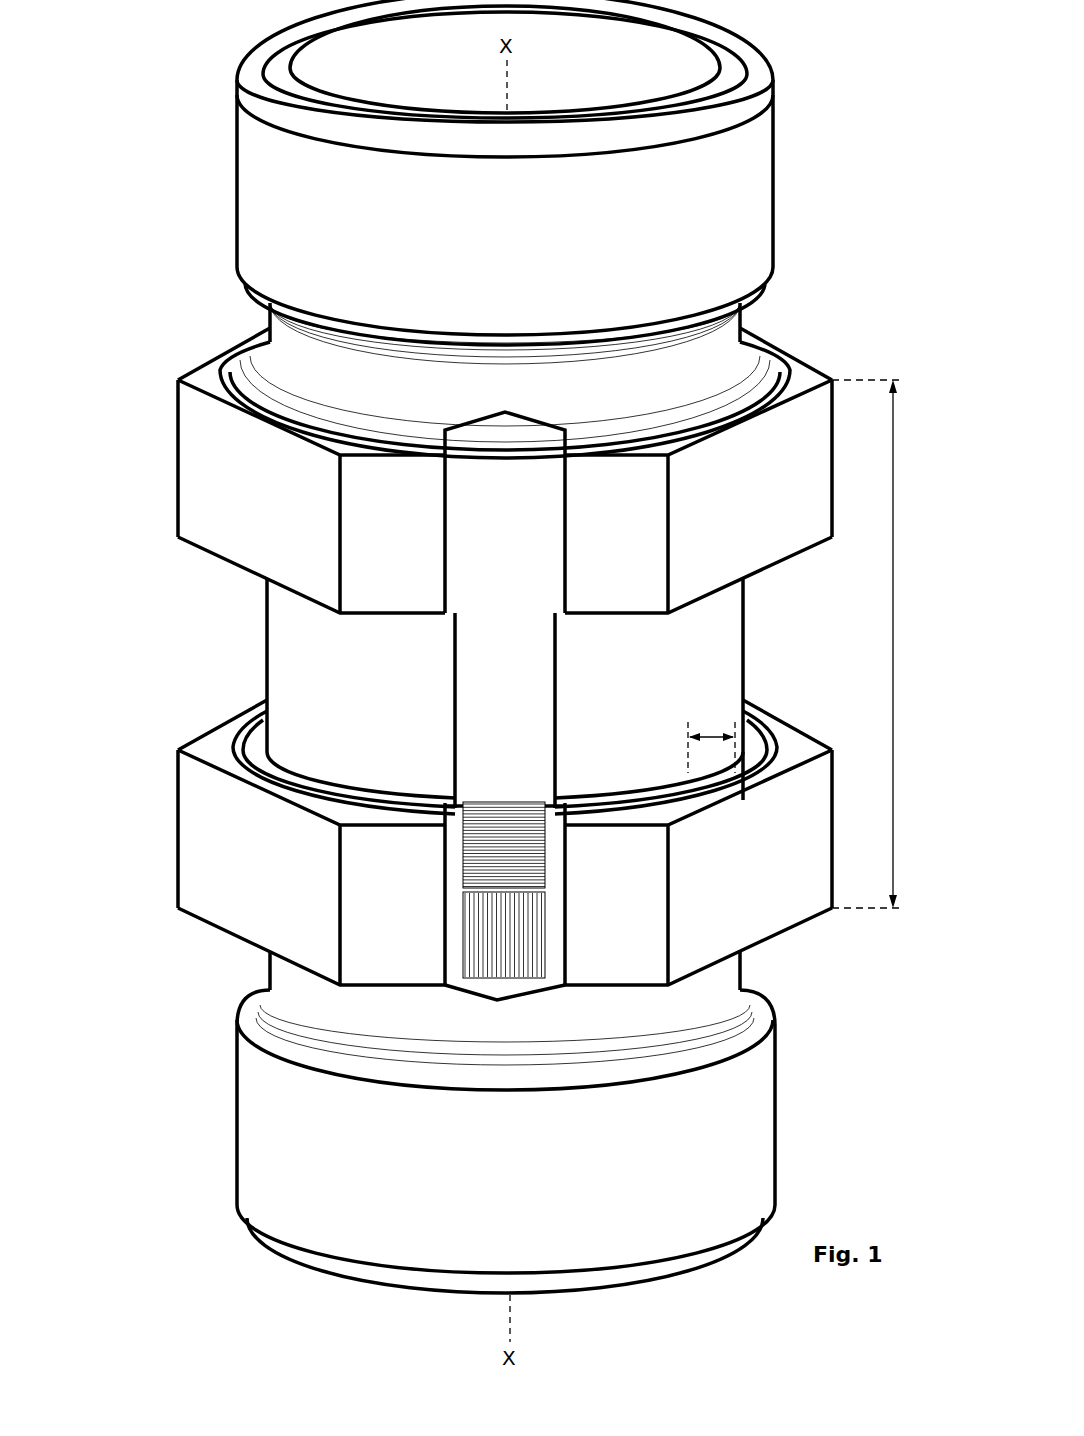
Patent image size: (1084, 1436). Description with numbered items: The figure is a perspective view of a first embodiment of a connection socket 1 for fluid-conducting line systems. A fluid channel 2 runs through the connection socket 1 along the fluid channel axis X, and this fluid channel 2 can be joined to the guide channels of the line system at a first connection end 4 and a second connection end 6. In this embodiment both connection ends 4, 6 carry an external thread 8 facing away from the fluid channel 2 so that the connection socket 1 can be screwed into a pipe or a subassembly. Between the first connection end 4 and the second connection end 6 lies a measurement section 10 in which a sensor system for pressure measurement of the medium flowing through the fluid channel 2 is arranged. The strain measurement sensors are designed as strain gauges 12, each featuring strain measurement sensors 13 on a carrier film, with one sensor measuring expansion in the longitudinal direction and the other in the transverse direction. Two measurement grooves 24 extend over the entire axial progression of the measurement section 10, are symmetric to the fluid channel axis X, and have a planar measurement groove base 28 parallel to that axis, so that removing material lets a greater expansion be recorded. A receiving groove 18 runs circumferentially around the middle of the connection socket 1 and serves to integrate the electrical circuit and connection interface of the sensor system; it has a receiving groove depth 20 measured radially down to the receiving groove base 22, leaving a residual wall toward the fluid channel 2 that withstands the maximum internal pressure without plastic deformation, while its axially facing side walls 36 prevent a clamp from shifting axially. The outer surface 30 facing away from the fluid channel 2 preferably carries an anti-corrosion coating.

The connection socket 1 is at (203, 160).
The fluid channel 2 is at (351, 58).
The first connection end 4 is at (727, 64).
The second connection end 6 is at (372, 1287).
The external thread 8 is at (763, 185).
The measurement section 10 is at (882, 644).
The strain gauge 12 is at (548, 890).
The strain measurement sensor 13 is at (492, 812).
The receiving groove 18 is at (265, 597).
The receiving groove depth 20 is at (711, 740).
The receiving groove base 22 is at (297, 675).
The measurement groove 24 is at (440, 548).
The measurement groove base 28 is at (467, 455).
The outer surface 30 is at (708, 345).
The side wall 36 is at (228, 746).